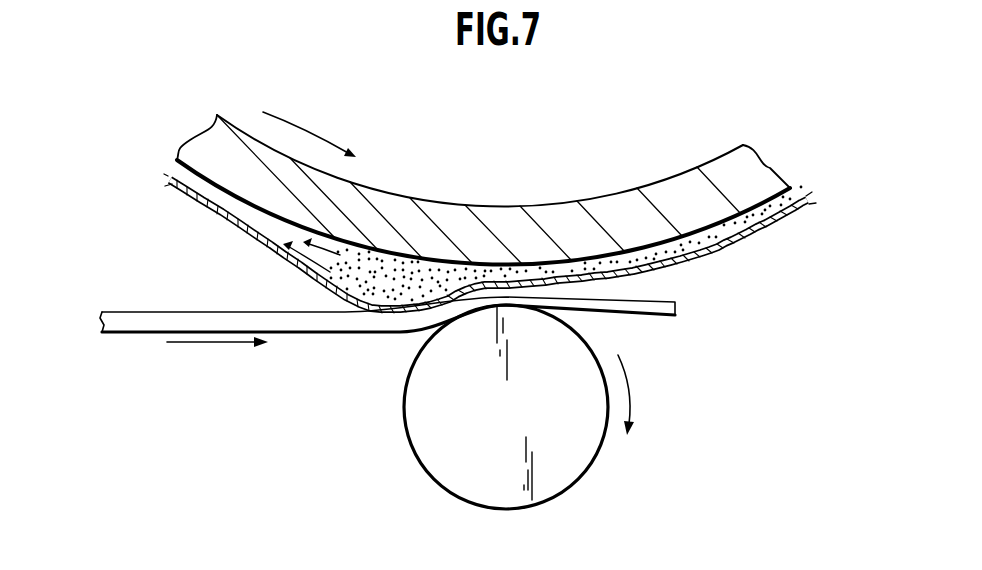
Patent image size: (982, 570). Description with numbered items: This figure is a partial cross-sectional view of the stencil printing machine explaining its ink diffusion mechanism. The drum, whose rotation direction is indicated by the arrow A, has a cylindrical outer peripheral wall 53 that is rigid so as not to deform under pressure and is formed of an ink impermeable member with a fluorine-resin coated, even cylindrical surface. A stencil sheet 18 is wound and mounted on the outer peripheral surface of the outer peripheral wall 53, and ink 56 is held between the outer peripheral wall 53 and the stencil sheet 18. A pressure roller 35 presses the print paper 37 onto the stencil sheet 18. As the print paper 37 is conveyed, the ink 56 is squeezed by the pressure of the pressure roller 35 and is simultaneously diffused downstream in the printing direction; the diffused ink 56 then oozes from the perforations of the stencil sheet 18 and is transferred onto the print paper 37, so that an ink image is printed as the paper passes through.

The outer peripheral wall 53 is at (570, 209).
The stencil sheet 18 is at (322, 290).
The ink 56 is at (381, 298).
The print paper 37 is at (130, 323).
The pressure roller 35 is at (588, 470).
The arrow A is at (295, 127).